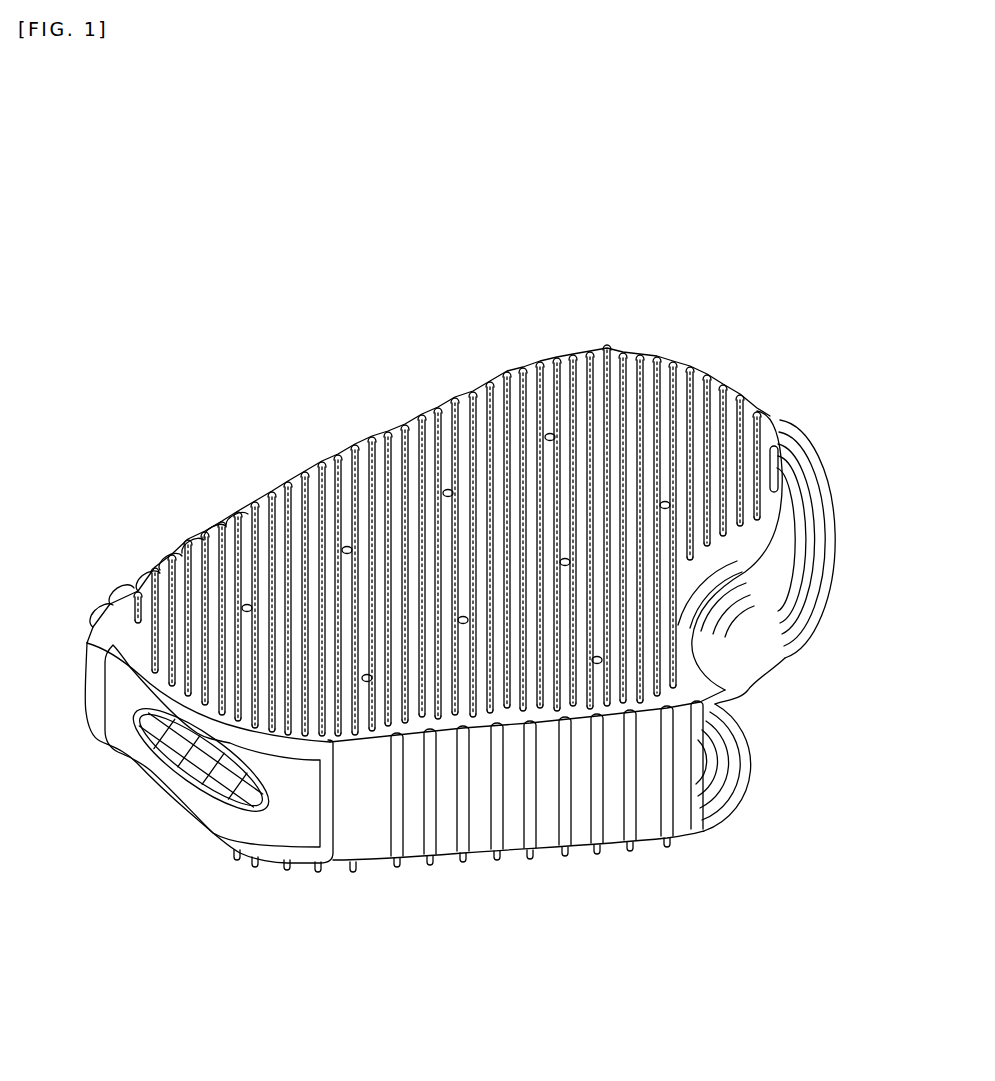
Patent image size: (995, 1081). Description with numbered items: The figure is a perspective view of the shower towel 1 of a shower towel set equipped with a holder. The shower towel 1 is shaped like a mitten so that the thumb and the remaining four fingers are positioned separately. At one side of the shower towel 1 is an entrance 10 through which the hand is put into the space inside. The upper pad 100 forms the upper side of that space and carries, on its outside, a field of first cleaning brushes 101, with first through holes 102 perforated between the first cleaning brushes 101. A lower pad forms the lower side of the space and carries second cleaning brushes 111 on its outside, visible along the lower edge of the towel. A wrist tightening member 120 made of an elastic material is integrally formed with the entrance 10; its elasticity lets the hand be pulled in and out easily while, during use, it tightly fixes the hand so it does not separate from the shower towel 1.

The shower towel 1 is at (315, 330).
The upper pad 100 is at (763, 440).
The first cleaning brushes 101 is at (263, 503).
The first through holes 102 is at (450, 492).
The entrance 10 is at (197, 790).
The wrist tightening member 120 is at (298, 817).
The second cleaning brushes 111 is at (387, 865).